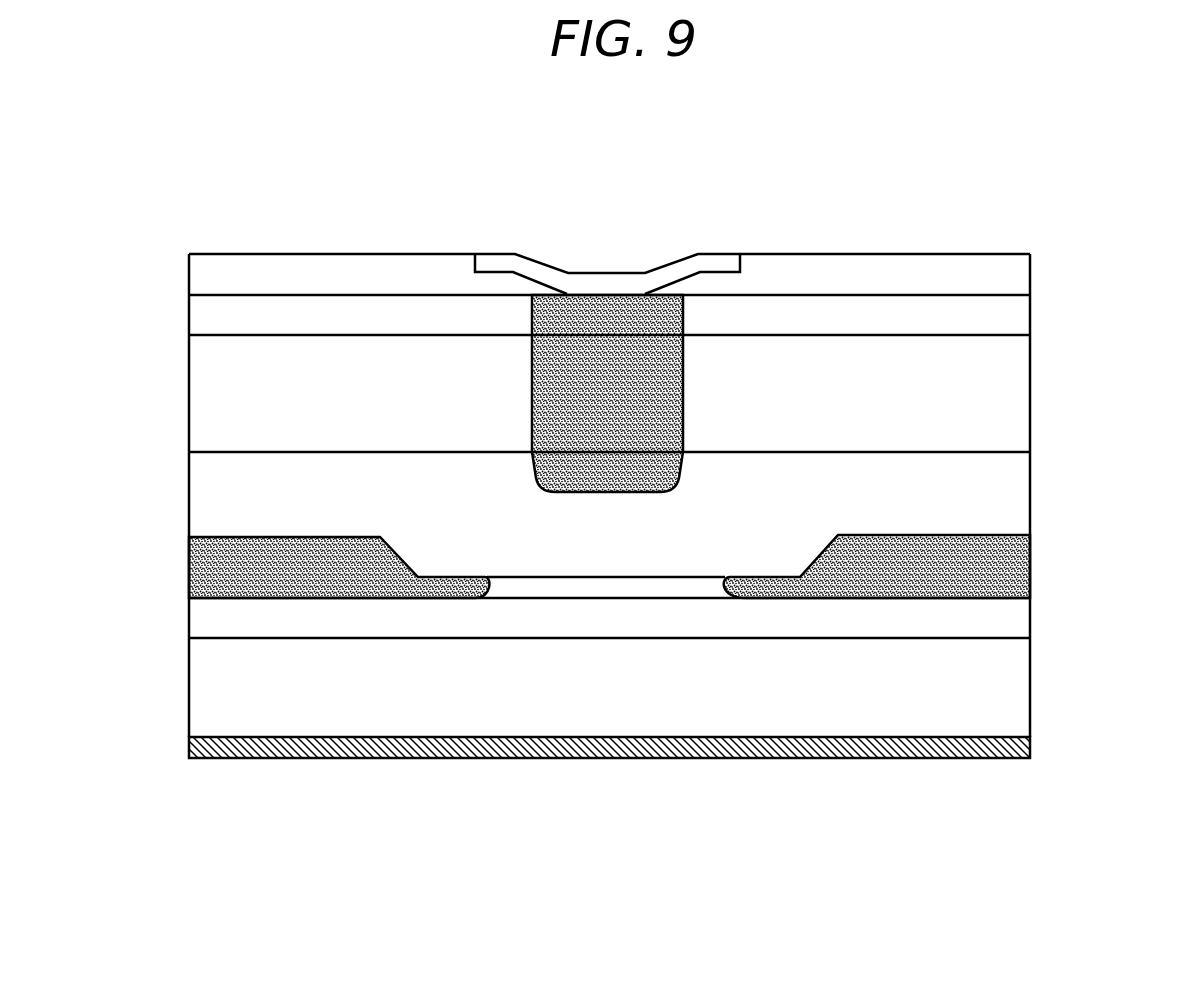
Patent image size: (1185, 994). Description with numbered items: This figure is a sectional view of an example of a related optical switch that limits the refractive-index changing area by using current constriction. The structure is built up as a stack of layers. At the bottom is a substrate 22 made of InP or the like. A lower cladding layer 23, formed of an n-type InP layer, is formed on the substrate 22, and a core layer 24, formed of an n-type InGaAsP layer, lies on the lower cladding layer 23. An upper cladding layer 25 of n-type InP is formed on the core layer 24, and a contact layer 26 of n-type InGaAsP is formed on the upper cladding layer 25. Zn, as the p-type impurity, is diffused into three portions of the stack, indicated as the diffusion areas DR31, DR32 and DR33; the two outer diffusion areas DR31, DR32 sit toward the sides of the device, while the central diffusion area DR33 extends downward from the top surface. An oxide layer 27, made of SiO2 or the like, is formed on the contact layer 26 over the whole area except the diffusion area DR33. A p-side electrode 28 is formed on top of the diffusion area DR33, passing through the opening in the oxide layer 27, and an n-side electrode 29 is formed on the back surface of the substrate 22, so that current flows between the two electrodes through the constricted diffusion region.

The substrate 22 is at (1030, 688).
The lower cladding layer 23 is at (1030, 612).
The core layer 24 is at (1030, 487).
The upper cladding layer 25 is at (1030, 388).
The contact layer 26 is at (1030, 306).
The oxide layer 27 is at (1030, 266).
The p-side electrode 28 is at (267, 254).
The n-side electrode 29 is at (533, 758).
The diffusion area DR31 is at (887, 568).
The diffusion area DR32 is at (338, 577).
The diffusion area DR33 is at (600, 375).